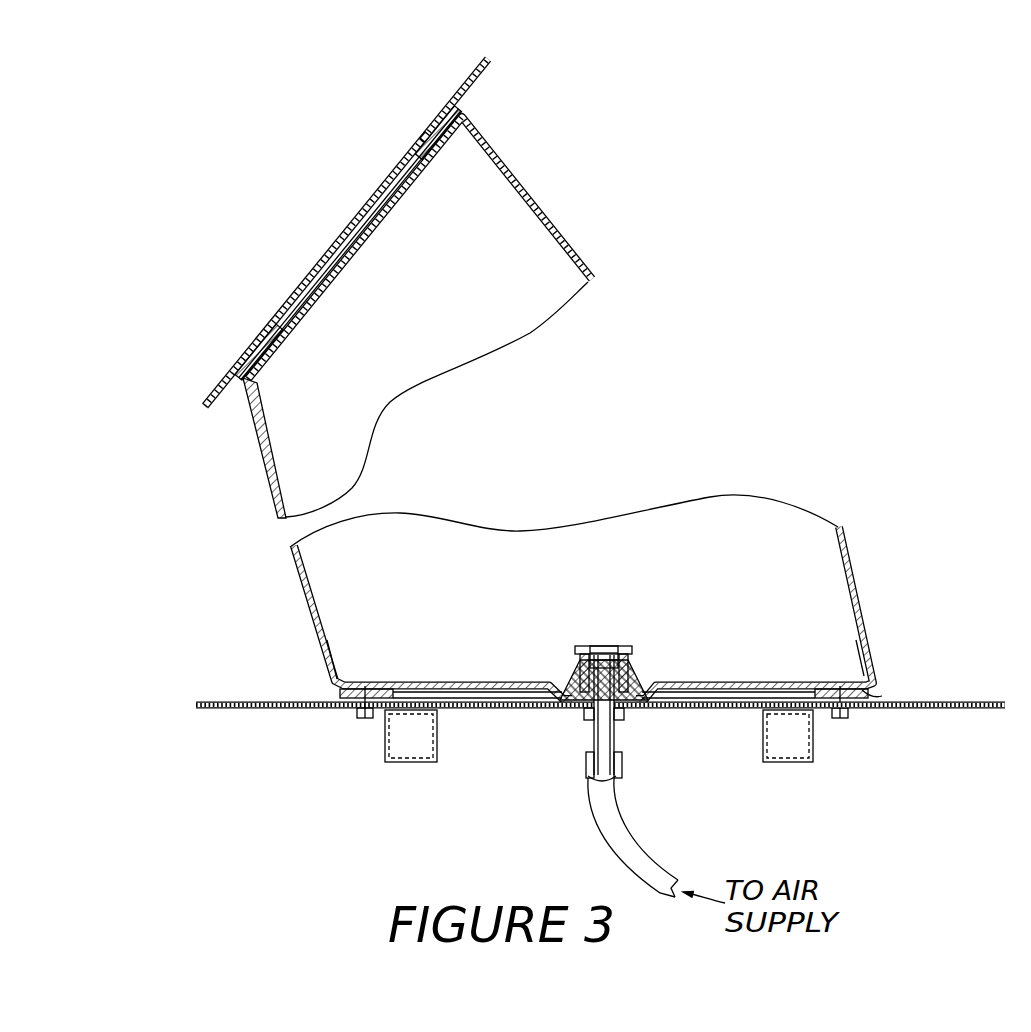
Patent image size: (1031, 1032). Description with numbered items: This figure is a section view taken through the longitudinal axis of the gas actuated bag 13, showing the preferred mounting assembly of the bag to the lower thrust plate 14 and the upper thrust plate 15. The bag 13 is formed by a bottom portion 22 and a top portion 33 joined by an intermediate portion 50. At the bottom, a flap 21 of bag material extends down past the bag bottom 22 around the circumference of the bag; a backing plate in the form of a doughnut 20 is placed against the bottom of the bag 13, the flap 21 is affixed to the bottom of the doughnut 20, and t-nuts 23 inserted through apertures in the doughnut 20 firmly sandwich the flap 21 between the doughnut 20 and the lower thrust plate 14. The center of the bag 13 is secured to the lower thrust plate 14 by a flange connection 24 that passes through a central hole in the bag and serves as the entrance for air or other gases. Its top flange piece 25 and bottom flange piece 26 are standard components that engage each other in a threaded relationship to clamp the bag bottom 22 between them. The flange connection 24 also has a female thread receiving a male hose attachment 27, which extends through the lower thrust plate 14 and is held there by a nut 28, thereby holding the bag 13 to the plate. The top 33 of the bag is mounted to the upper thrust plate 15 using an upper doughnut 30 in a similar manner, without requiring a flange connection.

The gas actuated bag 13 is at (837, 528).
The lower thrust plate 14 is at (926, 710).
The upper thrust plate 15 is at (453, 100).
The doughnut 20 is at (873, 683).
The flap 21 is at (881, 691).
The bottom portion 22 is at (783, 681).
The t-nuts 23 is at (848, 680).
The flange connection 24 is at (560, 633).
The top flange piece 25 is at (570, 655).
The bottom flange piece 26 is at (568, 708).
The male hose attachment 27 is at (612, 740).
The nut 28 is at (622, 714).
The upper doughnut 30 is at (403, 168).
The top portion 33 is at (368, 249).
The intermediate portion 50 is at (299, 598).